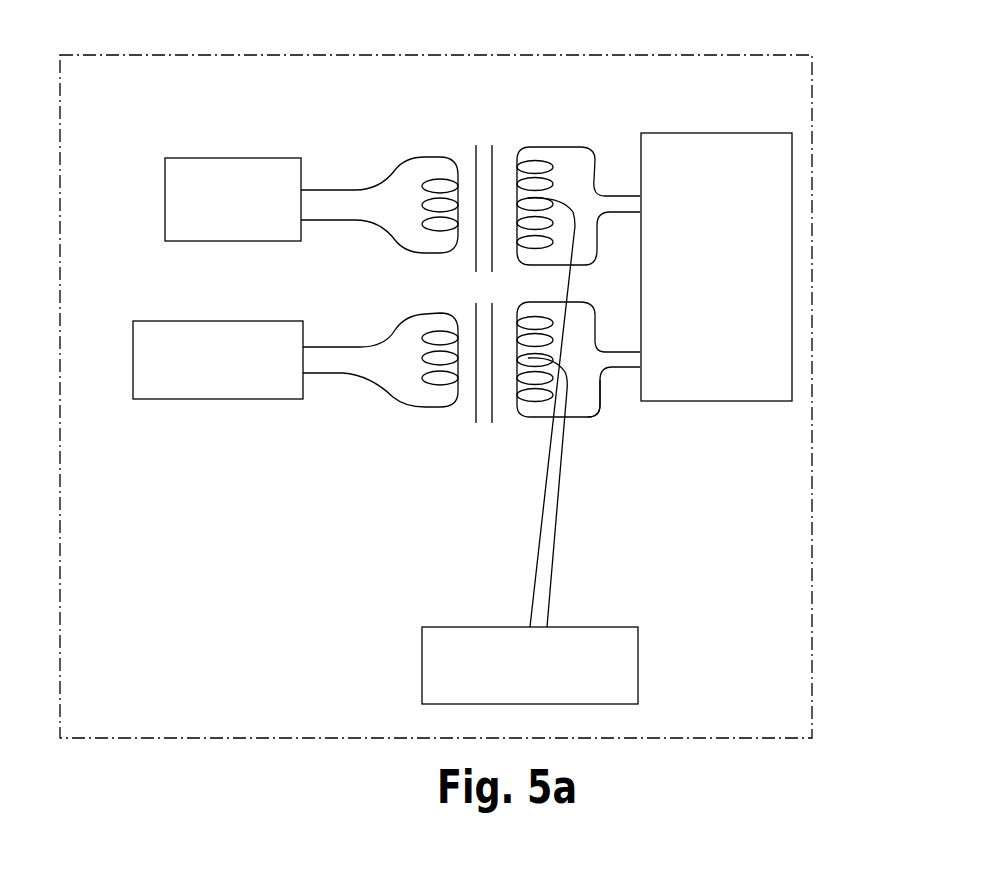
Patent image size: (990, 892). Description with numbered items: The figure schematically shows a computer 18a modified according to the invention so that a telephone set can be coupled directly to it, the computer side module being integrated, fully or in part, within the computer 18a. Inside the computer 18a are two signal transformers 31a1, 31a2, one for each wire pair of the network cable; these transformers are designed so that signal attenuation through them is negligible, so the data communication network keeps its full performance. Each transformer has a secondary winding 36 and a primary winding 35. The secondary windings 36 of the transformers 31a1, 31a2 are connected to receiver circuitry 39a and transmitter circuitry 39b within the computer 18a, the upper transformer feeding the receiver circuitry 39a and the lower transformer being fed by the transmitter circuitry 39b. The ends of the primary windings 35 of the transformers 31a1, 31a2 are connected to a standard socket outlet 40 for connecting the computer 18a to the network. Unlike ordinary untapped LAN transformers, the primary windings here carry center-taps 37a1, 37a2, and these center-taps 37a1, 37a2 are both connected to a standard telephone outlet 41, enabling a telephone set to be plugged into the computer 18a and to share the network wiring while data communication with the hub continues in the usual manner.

The computer 18a is at (820, 538).
The receiver circuitry 39a is at (165, 194).
The transmitter circuitry 39b is at (258, 399).
The signal transformer 31a1 is at (491, 145).
The signal transformer 31a2 is at (493, 413).
The secondary winding 36 is at (438, 357).
The primary winding 35 is at (537, 405).
The center-tap 37a1 is at (597, 228).
The center-tap 37a2 is at (600, 385).
The socket outlet 40 is at (793, 238).
The telephone outlet 41 is at (640, 652).